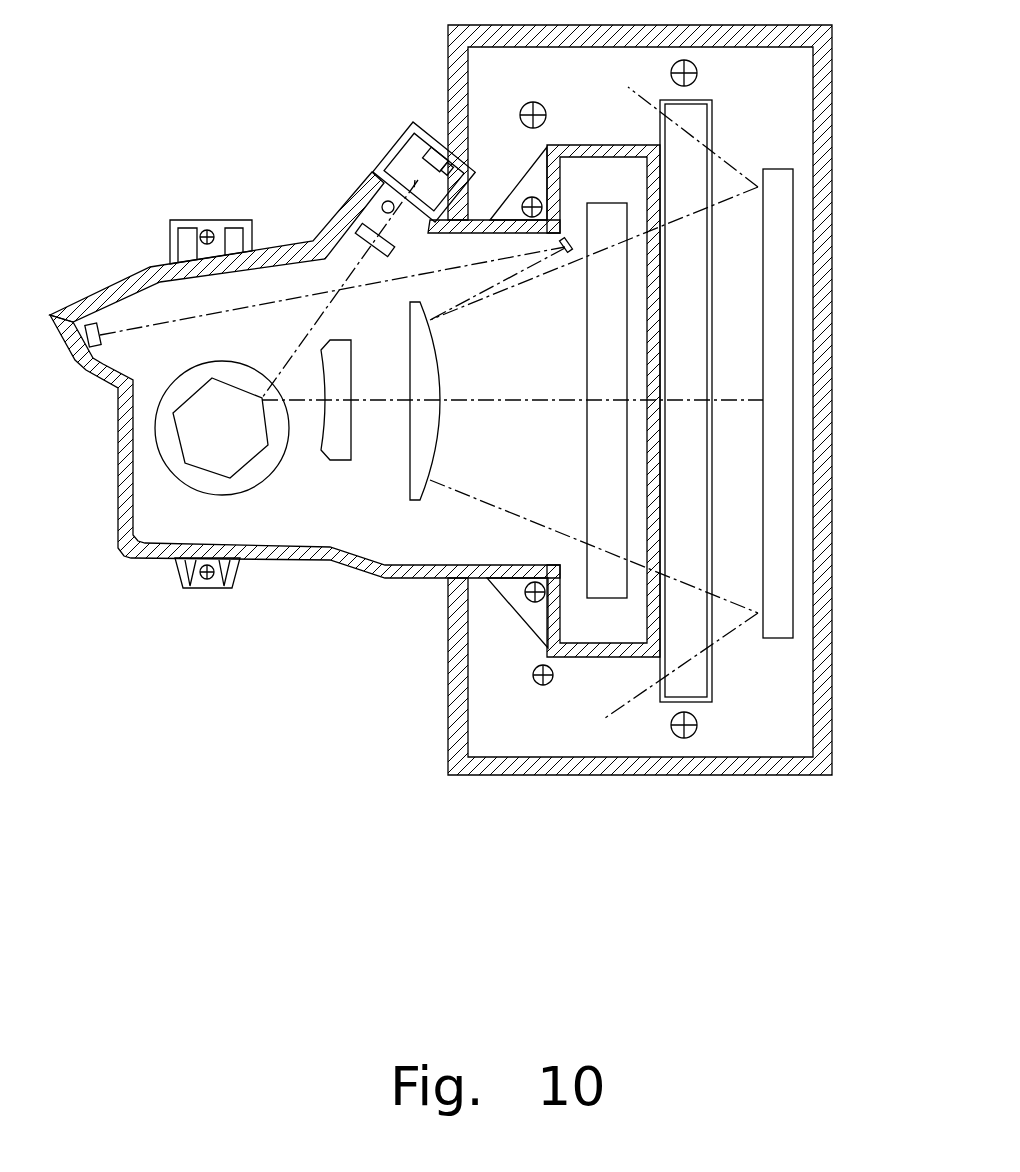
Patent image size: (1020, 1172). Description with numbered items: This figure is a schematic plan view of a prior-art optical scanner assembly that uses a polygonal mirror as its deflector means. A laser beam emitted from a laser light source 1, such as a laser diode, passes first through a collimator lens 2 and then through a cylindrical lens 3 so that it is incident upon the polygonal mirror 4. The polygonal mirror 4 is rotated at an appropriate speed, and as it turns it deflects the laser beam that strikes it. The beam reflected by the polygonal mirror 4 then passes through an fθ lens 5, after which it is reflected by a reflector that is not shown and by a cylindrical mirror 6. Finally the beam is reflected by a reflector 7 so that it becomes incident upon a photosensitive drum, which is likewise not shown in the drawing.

The laser light source 1 is at (406, 136).
The collimator lens 2 is at (366, 182).
The cylindrical lens 3 is at (356, 208).
The polygonal mirror 4 is at (207, 452).
The fθ lens 5 is at (310, 482).
The cylindrical mirror 6 is at (600, 352).
The reflector 7 is at (776, 436).